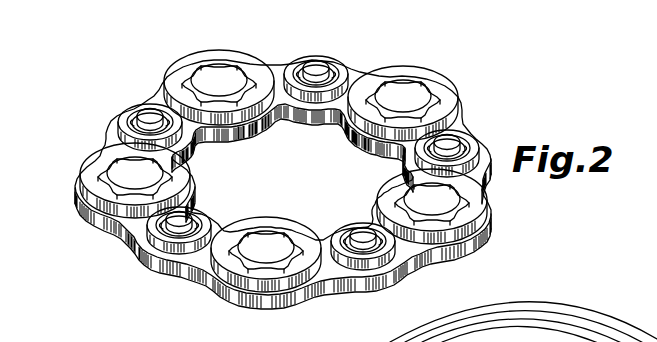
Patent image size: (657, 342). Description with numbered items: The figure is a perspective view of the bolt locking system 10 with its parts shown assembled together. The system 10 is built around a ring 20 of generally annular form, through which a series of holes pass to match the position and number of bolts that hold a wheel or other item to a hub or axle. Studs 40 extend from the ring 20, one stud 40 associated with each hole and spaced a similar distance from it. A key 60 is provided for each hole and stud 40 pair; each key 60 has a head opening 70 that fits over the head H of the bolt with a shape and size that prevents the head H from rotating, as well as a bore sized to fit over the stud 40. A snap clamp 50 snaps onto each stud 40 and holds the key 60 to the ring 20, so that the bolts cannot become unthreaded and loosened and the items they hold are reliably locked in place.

The bolt locking system 10 is at (287, 155).
The ring 20 is at (200, 281).
The stud 40 is at (147, 101).
The snap clamp 50 is at (471, 142).
The key 60 is at (251, 63).
The head opening 70 is at (181, 80).
The head H is at (214, 65).